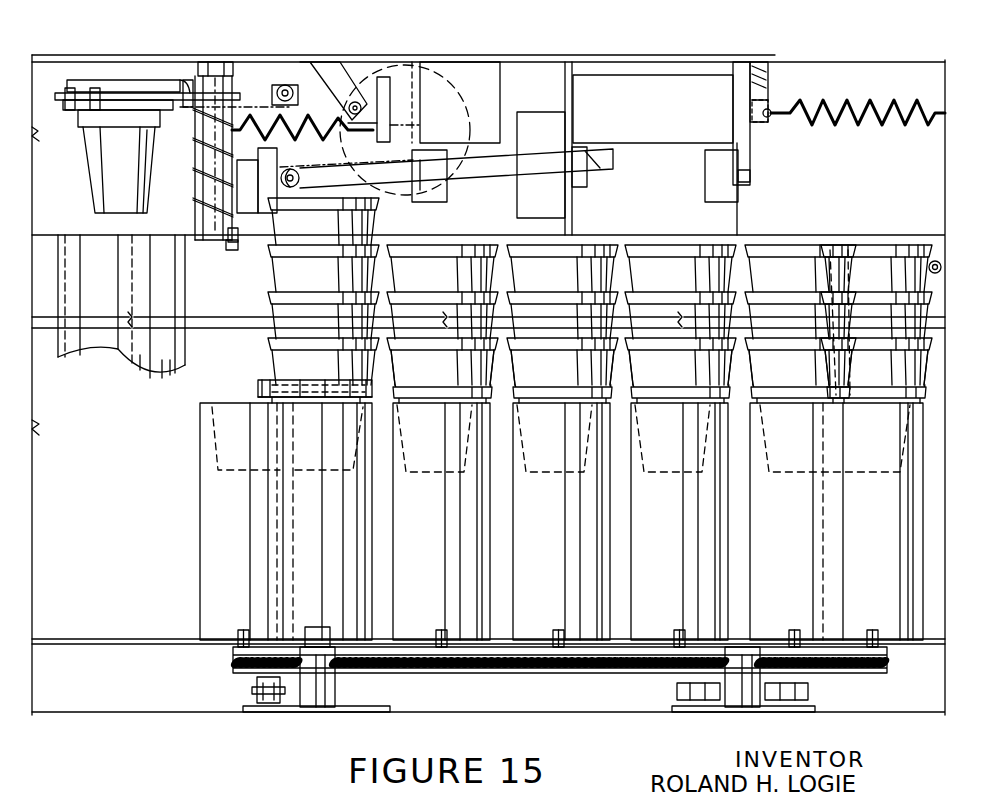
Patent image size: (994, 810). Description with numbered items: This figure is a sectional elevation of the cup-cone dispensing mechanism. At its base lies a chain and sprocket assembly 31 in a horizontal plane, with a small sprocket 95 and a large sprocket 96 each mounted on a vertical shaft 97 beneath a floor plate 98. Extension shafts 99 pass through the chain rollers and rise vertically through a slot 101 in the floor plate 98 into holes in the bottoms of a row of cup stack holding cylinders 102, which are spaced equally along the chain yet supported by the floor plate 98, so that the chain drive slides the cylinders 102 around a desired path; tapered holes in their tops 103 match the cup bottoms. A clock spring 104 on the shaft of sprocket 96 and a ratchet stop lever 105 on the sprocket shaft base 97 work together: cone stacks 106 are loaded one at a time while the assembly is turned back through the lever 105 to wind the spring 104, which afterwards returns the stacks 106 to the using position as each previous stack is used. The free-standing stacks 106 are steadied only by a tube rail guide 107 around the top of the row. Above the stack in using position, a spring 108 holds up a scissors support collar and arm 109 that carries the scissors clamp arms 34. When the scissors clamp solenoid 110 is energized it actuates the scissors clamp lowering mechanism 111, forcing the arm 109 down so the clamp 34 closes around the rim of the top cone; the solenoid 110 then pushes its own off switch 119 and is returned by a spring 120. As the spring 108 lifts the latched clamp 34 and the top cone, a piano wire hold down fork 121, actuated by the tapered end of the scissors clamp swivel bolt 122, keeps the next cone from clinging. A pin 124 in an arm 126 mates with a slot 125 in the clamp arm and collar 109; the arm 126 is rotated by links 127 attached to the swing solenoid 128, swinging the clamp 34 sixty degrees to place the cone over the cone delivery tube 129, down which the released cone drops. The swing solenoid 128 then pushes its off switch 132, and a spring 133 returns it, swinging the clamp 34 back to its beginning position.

The chain and sprocket assembly 31 is at (558, 680).
The scissors clamp arms 34 is at (67, 110).
The small sprocket 95 is at (367, 672).
The large sprocket 96 is at (657, 668).
The vertical shaft 97 is at (316, 710).
The floor plate 98 is at (172, 646).
The extension shafts 99 is at (247, 632).
The slot 101 is at (237, 638).
The cup stack holding cylinders 102 is at (200, 515).
The tapered holes in cylinder tops 103 is at (447, 473).
The clock spring 104 is at (808, 688).
The ratchet stop lever 105 is at (257, 677).
The cone stacks 106 is at (276, 358).
The tube rail guide 107 is at (937, 262).
The spring 108 is at (187, 220).
The scissors support collar and arm 109 is at (158, 145).
The scissors clamp solenoid 110 is at (505, 78).
The scissors clamp lowering mechanism 111 is at (345, 68).
The off switch 119 is at (422, 200).
The spring 120 is at (290, 130).
The piano wire hold down fork 121 is at (294, 250).
The scissors clamp swivel bolt 122 is at (133, 112).
The pin 124 is at (200, 75).
The slot 125 is at (220, 78).
The arm 126 is at (210, 62).
The links 127 is at (590, 62).
The swing solenoid 128 is at (738, 78).
The cone delivery tube 129 is at (70, 368).
The off switch 132 is at (700, 185).
The spring 133 is at (897, 118).